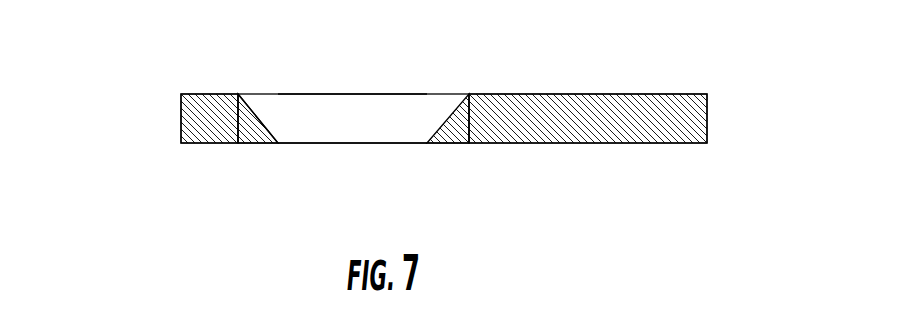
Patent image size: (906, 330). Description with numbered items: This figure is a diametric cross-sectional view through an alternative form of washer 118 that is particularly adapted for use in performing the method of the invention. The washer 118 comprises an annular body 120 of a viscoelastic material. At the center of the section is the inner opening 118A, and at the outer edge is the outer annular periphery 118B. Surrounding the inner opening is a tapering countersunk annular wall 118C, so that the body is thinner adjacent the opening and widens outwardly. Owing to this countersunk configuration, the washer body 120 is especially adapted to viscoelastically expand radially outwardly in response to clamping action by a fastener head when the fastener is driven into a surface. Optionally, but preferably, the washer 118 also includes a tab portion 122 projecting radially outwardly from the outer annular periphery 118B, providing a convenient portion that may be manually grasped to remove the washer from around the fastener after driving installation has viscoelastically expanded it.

The washer 118 is at (558, 143).
The inner opening 118A is at (378, 143).
The outer annular periphery 118B is at (181, 125).
The tapering countersunk annular wall 118C is at (258, 116).
The annular body 120 is at (249, 141).
The tab portion 122 is at (690, 94).